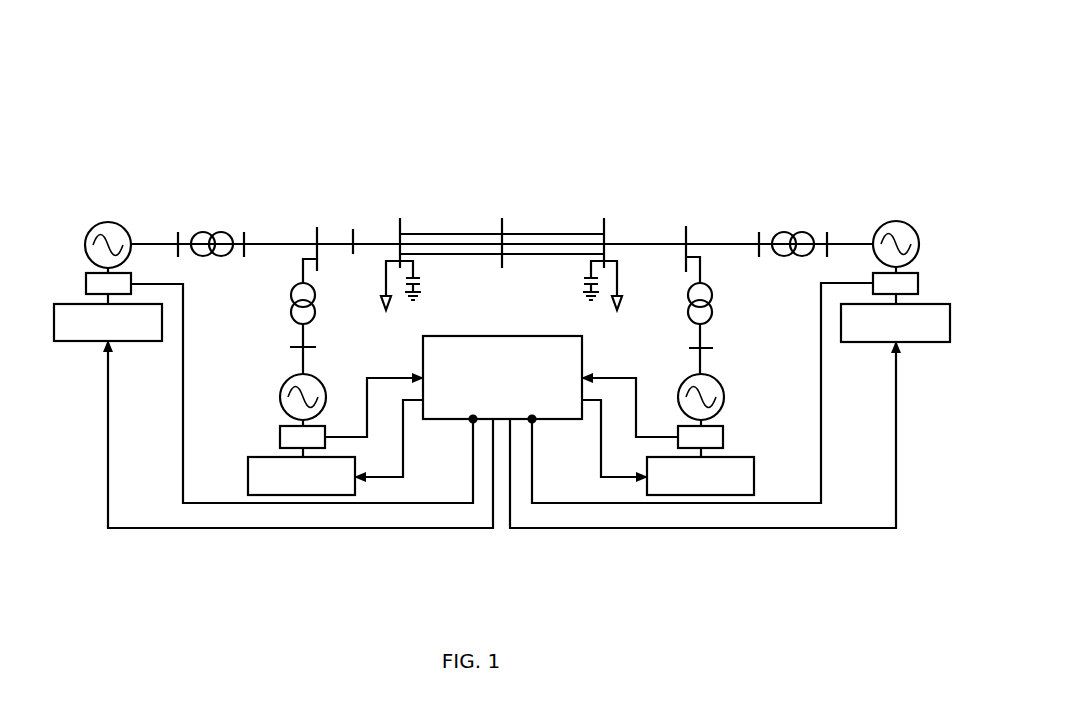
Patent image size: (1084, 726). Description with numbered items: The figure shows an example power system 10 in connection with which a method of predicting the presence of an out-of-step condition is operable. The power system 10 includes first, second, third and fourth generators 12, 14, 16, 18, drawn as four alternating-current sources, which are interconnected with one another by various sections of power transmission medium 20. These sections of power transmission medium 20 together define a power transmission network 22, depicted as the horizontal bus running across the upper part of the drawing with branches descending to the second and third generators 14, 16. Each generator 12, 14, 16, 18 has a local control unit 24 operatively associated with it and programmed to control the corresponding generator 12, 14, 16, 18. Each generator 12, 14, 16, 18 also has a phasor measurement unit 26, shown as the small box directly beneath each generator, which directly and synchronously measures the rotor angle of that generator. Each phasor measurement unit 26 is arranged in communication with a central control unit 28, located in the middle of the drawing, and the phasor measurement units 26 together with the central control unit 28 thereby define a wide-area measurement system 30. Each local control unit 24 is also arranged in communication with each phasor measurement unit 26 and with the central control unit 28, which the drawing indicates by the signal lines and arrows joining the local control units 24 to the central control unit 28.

The power system 10 is at (347, 54).
The first generator 12 is at (105, 222).
The second generator 14 is at (287, 381).
The third generator 16 is at (718, 381).
The fourth generator 18 is at (896, 220).
The power transmission medium 20 is at (278, 242).
The power transmission network 22 is at (724, 142).
The local control unit 24 is at (77, 343).
The phasor measurement unit 26 is at (86, 277).
The central control unit 28 is at (502, 336).
The wide-area measurement system 30 is at (795, 400).